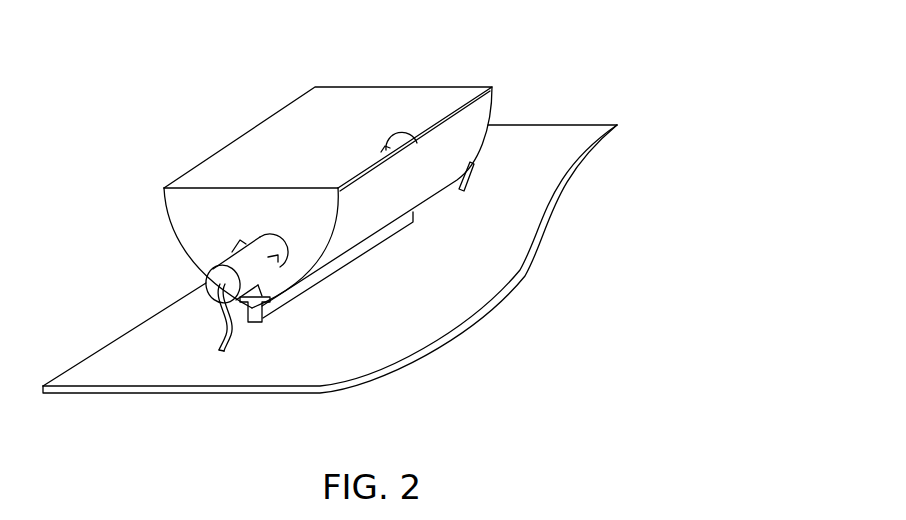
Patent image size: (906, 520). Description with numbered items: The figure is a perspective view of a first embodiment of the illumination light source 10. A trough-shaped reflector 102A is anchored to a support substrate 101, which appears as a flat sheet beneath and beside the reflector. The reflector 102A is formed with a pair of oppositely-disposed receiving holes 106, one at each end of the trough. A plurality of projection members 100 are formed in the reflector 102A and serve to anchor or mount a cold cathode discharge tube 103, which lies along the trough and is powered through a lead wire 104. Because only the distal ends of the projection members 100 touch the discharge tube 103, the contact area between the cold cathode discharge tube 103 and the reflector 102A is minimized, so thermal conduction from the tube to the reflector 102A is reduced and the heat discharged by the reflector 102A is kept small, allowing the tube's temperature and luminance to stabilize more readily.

The illumination light source 10 is at (220, 114).
The projection members 100 is at (298, 290).
The support substrate 101 is at (497, 223).
The trough-shaped reflector 102A is at (410, 87).
The cold cathode discharge tube 103 is at (242, 263).
The lead wire 104 is at (217, 340).
The receiving holes 106 is at (402, 131).